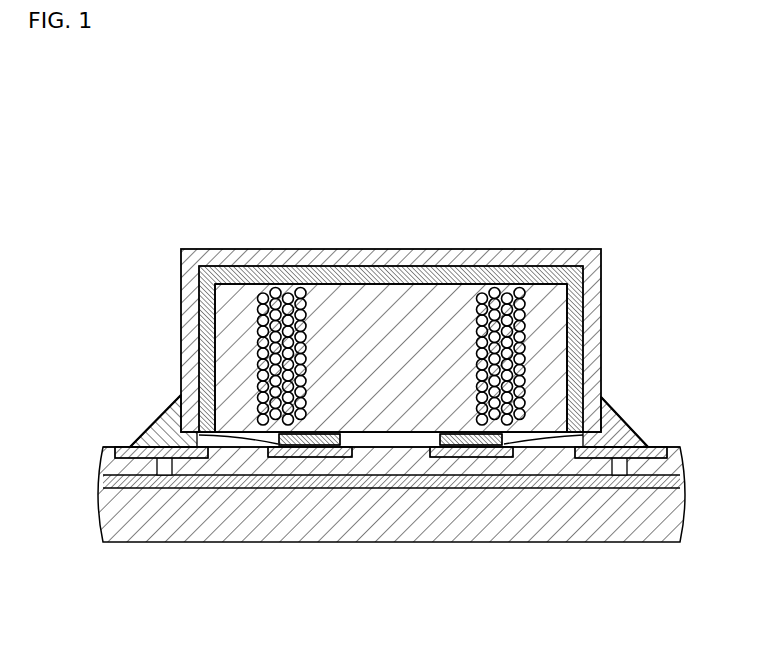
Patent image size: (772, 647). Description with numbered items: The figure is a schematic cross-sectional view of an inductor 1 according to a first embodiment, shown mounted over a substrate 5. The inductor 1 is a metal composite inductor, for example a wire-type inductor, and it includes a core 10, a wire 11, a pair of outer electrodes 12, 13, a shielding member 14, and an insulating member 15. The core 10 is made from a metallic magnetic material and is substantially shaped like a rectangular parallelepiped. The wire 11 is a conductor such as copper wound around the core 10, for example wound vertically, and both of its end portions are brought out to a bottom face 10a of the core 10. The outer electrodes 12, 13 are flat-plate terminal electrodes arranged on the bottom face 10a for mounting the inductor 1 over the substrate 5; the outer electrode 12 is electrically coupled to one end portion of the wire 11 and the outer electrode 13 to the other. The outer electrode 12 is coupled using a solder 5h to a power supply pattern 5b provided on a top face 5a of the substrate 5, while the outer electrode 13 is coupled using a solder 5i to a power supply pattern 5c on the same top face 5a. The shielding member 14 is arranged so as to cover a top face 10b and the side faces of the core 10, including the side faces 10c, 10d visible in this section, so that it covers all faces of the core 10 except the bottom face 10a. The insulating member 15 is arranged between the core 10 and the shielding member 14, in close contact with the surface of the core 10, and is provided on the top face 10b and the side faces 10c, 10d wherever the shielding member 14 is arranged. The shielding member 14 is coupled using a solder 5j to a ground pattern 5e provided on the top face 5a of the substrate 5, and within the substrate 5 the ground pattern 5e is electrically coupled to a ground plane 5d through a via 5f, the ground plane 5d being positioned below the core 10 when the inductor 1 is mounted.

The inductor 1 is at (390, 204).
The substrate 5 is at (224, 543).
The top face of the substrate 5a is at (104, 445).
The power supply pattern 5b is at (275, 452).
The power supply pattern 5c is at (503, 458).
The ground plane 5d is at (357, 481).
The ground pattern 5e is at (117, 452).
The via 5f is at (164, 466).
The solder 5h is at (199, 432).
The solder 5i is at (585, 431).
The solder 5j is at (172, 404).
The core 10 is at (443, 292).
The bottom face of the core 10a is at (405, 434).
The top face of the core 10b is at (319, 284).
The side face of the core 10c is at (216, 329).
The side face of the core 10d is at (566, 329).
The wire 11 is at (504, 296).
The outer electrode 12 is at (278, 440).
The outer electrode 13 is at (503, 437).
The shielding member 14 is at (595, 256).
The insulating member 15 is at (556, 275).